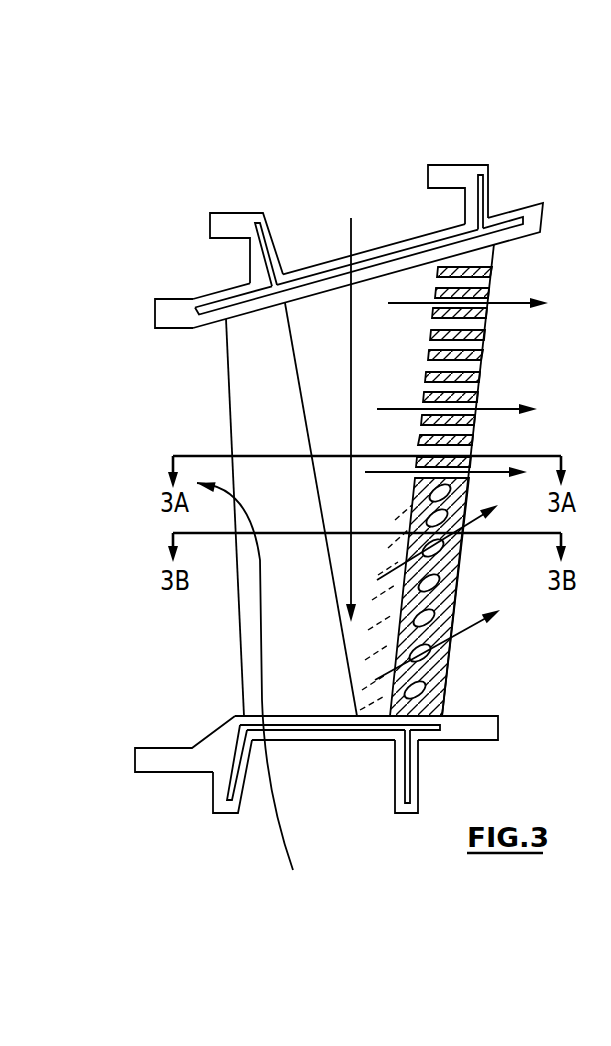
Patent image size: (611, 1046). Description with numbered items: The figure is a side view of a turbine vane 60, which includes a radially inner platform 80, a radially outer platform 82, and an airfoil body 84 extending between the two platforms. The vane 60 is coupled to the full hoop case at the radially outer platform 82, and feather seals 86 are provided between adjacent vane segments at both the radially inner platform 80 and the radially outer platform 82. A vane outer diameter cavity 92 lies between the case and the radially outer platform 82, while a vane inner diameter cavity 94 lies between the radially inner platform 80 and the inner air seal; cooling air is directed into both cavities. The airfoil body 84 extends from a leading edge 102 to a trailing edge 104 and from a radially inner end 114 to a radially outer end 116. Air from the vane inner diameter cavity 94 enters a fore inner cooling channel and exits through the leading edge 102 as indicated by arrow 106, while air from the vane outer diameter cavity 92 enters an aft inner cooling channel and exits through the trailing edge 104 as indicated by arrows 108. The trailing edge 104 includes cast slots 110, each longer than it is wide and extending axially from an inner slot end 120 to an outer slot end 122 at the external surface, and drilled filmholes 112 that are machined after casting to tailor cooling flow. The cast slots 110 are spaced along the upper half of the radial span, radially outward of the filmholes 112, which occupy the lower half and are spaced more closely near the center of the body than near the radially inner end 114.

The vane 60 is at (147, 352).
The radially inner platform 80 is at (495, 730).
The radially outer platform 82 is at (538, 222).
The airfoil body 84 is at (272, 413).
The feather seals 86 is at (228, 307).
The vane outer diameter cavity 92 is at (448, 212).
The vane inner diameter cavity 94 is at (378, 768).
The leading edge 102 is at (225, 387).
The trailing edge 104 is at (490, 283).
The arrow 106 is at (288, 792).
The arrows 108 is at (350, 232).
The cast slots 110 is at (498, 356).
The drilled filmholes 112 is at (427, 660).
The radially inner end 114 is at (245, 708).
The radially outer end 116 is at (230, 325).
The inner slot end 120 is at (438, 270).
The outer slot end 122 is at (485, 275).